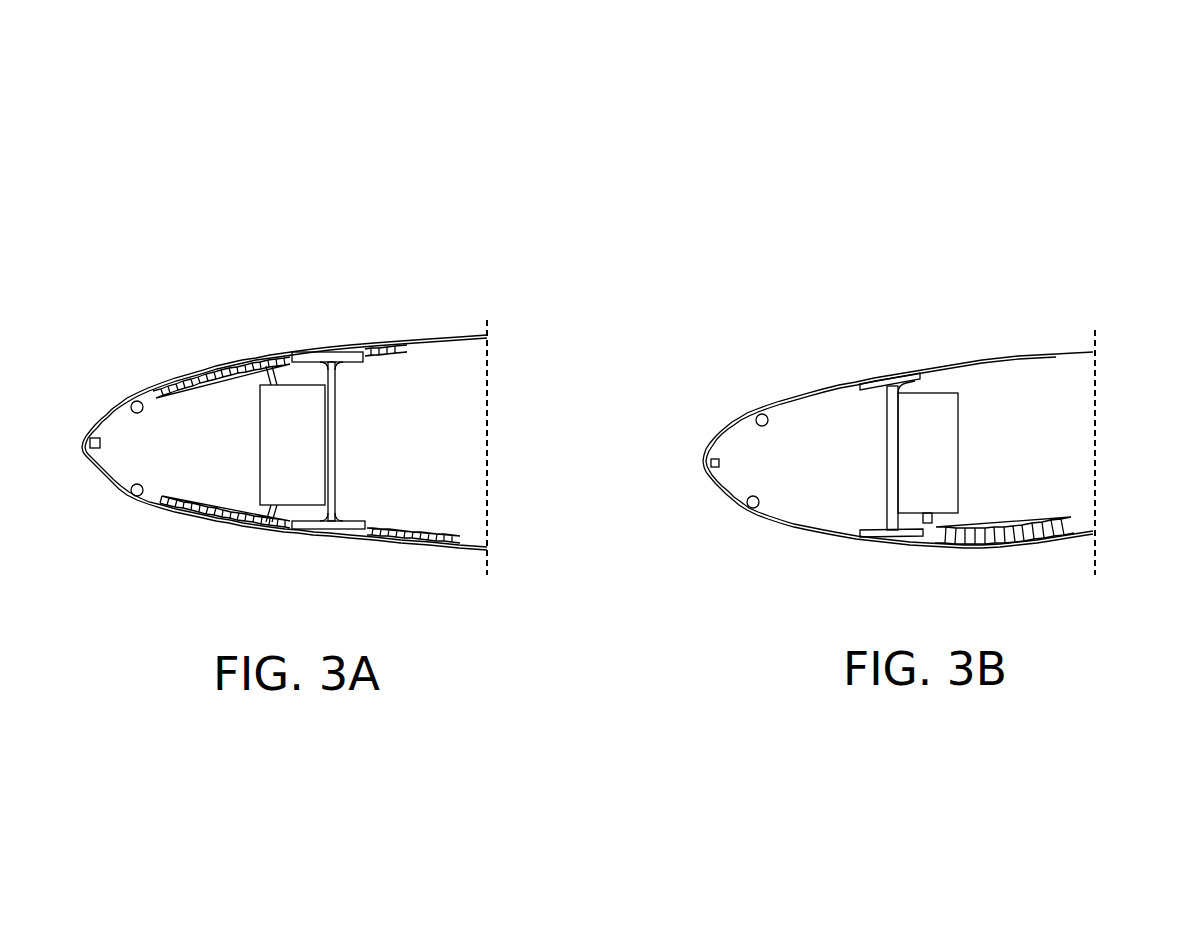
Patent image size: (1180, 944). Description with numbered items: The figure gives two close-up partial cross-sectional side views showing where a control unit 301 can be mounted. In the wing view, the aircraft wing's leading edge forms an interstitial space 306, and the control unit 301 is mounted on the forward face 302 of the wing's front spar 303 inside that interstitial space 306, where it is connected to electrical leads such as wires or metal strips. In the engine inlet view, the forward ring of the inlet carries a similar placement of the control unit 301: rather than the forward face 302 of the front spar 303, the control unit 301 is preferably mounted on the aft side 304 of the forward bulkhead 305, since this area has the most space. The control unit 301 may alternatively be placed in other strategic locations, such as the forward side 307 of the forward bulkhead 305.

In FIG. 3A, the control unit 301 is at (320, 448).
In FIG. 3B, the control unit 301 is at (898, 445).
In FIG. 3A, the forward face 302 is at (323, 380).
In FIG. 3A, the front spar 303 is at (332, 362).
In FIG. 3B, the aft side 304 is at (897, 392).
In FIG. 3B, the forward bulkhead 305 is at (892, 383).
In FIG. 3A, the interstitial space 306 is at (460, 362).
In FIG. 3B, the forward side 307 is at (887, 402).